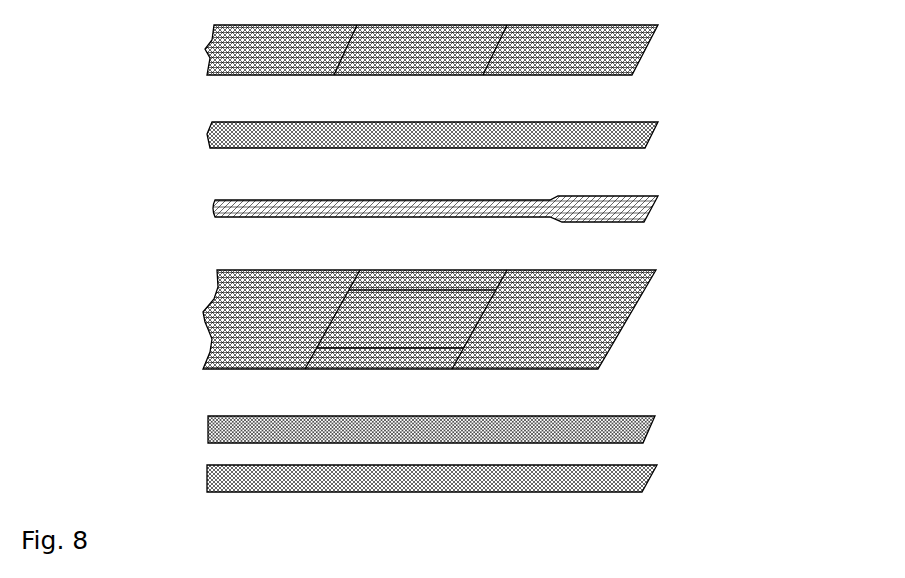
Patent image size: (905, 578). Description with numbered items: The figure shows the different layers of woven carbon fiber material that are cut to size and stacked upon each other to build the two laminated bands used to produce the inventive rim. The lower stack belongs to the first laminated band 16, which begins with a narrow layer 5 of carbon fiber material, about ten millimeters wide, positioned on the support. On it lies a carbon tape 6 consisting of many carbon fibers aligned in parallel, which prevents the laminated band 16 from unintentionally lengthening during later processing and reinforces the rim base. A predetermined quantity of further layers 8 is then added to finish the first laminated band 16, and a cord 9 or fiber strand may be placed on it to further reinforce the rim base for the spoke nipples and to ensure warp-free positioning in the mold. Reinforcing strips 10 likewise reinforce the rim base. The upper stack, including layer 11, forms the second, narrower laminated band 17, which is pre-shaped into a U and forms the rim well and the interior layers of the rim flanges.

The narrow layer 5 is at (205, 481).
The carbon tape 6 is at (206, 430).
The further layers 8 is at (205, 324).
The cord 9 is at (211, 214).
The reinforcing strips 10 is at (207, 134).
The fifth layer 11 is at (205, 49).
The first laminated band 16 is at (700, 336).
The second laminated band 17 is at (733, 73).